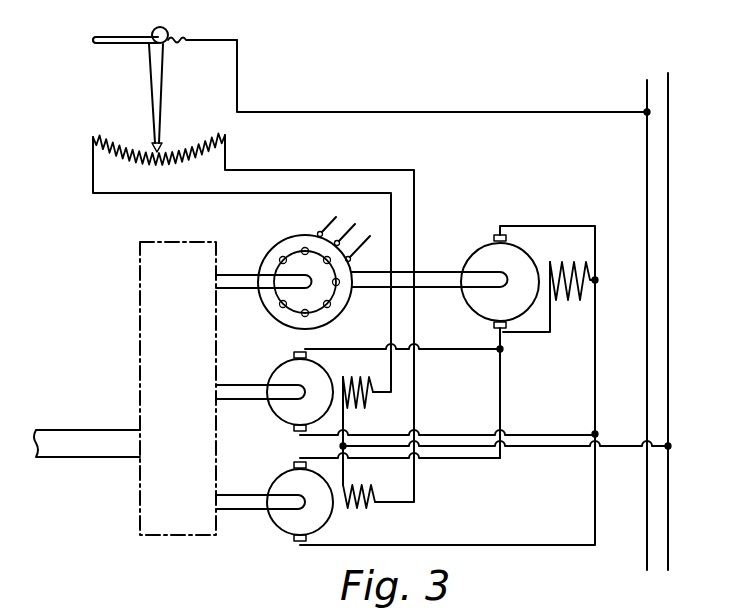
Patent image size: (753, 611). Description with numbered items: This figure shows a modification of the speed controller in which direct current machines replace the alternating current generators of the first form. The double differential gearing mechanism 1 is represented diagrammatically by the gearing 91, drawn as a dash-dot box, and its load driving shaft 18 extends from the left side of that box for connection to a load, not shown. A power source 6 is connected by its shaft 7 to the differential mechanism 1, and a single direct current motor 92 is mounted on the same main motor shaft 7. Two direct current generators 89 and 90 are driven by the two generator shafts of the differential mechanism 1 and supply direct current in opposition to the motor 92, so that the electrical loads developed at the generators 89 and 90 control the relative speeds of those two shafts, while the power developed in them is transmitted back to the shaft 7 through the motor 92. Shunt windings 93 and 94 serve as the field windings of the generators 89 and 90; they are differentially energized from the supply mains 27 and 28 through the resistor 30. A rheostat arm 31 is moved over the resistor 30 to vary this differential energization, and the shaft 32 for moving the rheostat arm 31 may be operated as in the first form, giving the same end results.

The double differential gearing mechanism 1 is at (84, 320).
The power source 6 is at (282, 240).
The shaft 7 is at (231, 273).
The load driving shaft 18 is at (58, 448).
The supply main 27 is at (645, 96).
The supply main 28 is at (669, 96).
The resistor 30 is at (195, 160).
The rheostat arm 31 is at (160, 95).
The shaft 32 is at (110, 36).
The direct current generator 89 is at (275, 372).
The direct current generator 90 is at (276, 526).
The gearing 91 is at (140, 365).
The direct current motor 92 is at (478, 258).
The shunt winding 93 is at (362, 378).
The shunt winding 94 is at (360, 514).